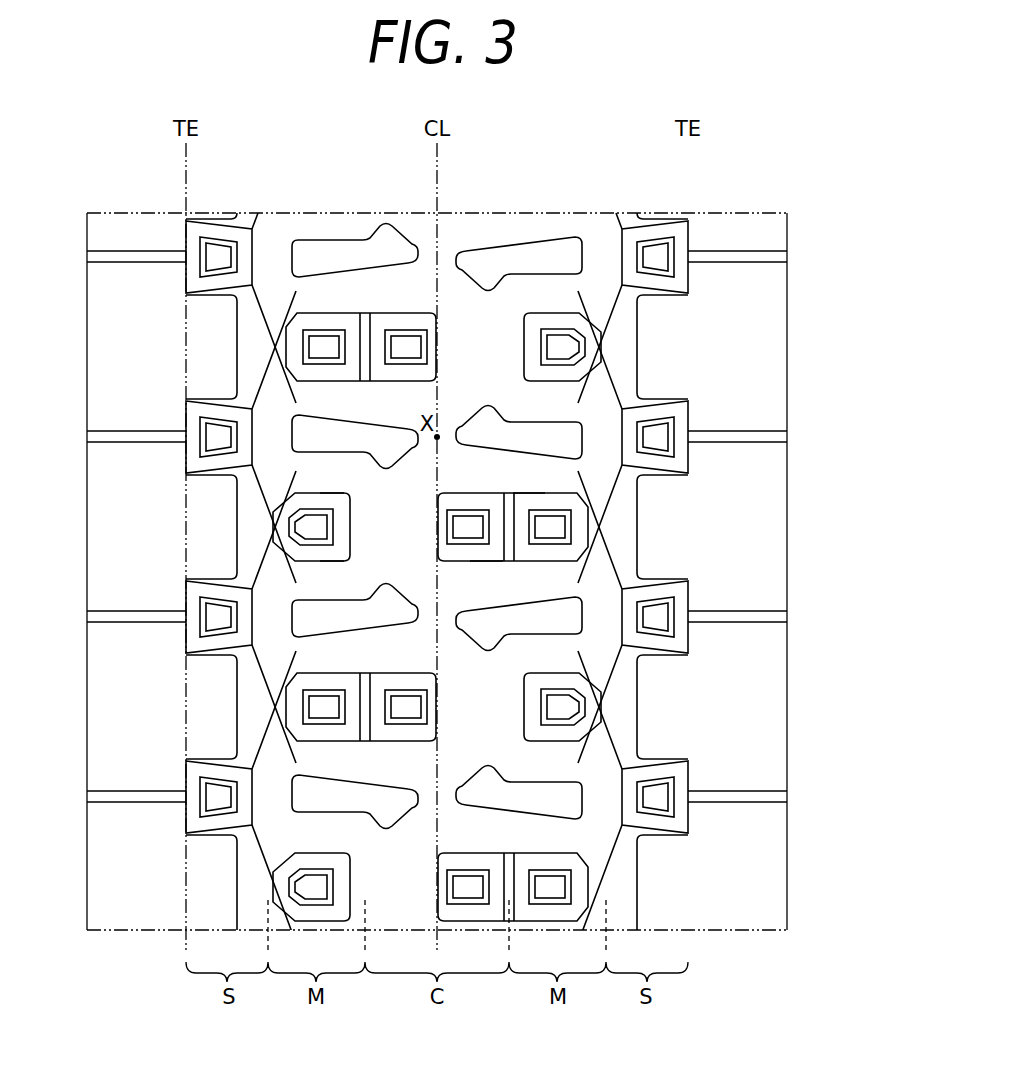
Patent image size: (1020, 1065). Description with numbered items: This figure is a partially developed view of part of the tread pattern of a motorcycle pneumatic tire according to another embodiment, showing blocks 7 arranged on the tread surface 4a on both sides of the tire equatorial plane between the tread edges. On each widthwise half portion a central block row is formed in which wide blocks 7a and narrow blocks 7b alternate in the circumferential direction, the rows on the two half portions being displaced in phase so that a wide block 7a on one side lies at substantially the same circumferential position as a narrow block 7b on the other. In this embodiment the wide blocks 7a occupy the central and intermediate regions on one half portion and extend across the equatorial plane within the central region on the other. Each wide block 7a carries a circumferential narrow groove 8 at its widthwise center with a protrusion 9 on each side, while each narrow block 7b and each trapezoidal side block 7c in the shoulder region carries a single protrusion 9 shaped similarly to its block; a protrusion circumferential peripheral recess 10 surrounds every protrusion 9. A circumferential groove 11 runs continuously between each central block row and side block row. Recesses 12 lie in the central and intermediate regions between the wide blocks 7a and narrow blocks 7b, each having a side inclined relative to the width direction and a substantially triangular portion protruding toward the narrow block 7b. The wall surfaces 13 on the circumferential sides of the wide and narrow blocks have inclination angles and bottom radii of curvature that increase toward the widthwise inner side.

The tread surface 4a is at (663, 355).
The block 7 is at (361, 347).
The wide block 7a is at (424, 524).
The narrow block 7b is at (357, 522).
The side block 7c is at (207, 577).
The circumferential narrow groove 8 is at (508, 500).
The protrusion 9 is at (314, 532).
The protrusion circumferential peripheral recess 10 is at (313, 508).
The circumferential groove 11 is at (269, 243).
The recess 12 is at (348, 441).
The wall surface 13 is at (335, 492).